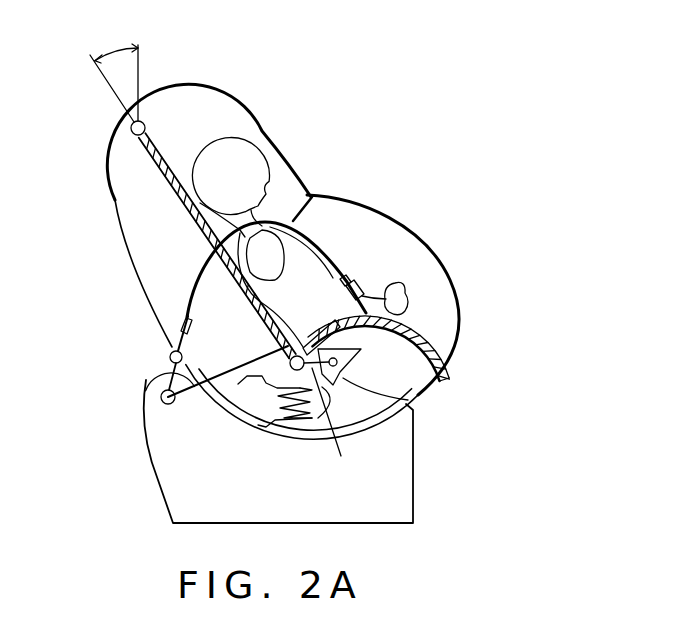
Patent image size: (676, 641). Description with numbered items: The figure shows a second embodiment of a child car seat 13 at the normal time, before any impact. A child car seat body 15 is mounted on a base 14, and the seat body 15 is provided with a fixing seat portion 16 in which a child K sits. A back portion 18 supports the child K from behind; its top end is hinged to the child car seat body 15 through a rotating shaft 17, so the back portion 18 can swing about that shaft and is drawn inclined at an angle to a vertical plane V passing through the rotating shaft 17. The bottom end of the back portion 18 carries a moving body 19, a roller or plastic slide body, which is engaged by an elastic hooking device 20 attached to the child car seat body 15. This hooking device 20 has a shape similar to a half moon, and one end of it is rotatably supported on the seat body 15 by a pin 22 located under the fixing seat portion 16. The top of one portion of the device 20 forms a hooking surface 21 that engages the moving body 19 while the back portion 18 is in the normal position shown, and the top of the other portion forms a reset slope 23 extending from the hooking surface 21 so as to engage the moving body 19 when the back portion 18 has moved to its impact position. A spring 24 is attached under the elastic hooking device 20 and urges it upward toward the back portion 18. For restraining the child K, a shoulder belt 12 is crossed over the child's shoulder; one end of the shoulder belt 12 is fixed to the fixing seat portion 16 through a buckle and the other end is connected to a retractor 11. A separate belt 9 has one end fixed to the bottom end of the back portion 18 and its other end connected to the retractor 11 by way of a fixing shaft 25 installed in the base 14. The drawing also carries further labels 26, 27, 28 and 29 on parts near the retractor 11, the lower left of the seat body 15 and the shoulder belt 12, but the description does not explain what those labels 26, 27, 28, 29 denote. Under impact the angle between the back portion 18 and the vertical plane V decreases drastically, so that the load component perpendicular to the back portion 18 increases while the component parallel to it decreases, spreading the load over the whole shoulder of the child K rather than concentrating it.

The belt 9 is at (160, 382).
The retractor 11 is at (169, 357).
The shoulder belt 12 is at (311, 197).
The child car seat 13 is at (409, 63).
The child car seat body 15 is at (385, 210).
The base 14 is at (175, 497).
The fixing seat portion 16 is at (430, 338).
The rotating shaft 17 is at (131, 128).
The back portion 18 is at (160, 166).
The moving body 19 is at (275, 350).
The elastic hooking device 20 is at (408, 400).
The hooking surface 21 is at (337, 431).
The pin 22 is at (347, 364).
The reset slope 23 is at (240, 393).
The spring 24 is at (255, 430).
The fixing shaft 25 is at (153, 407).
The strut block 26 is at (171, 340).
The strut 27 is at (171, 337).
The strap 28 is at (372, 293).
The buckle 29 is at (352, 280).
The child K is at (248, 150).
The vertical plane V is at (139, 68).